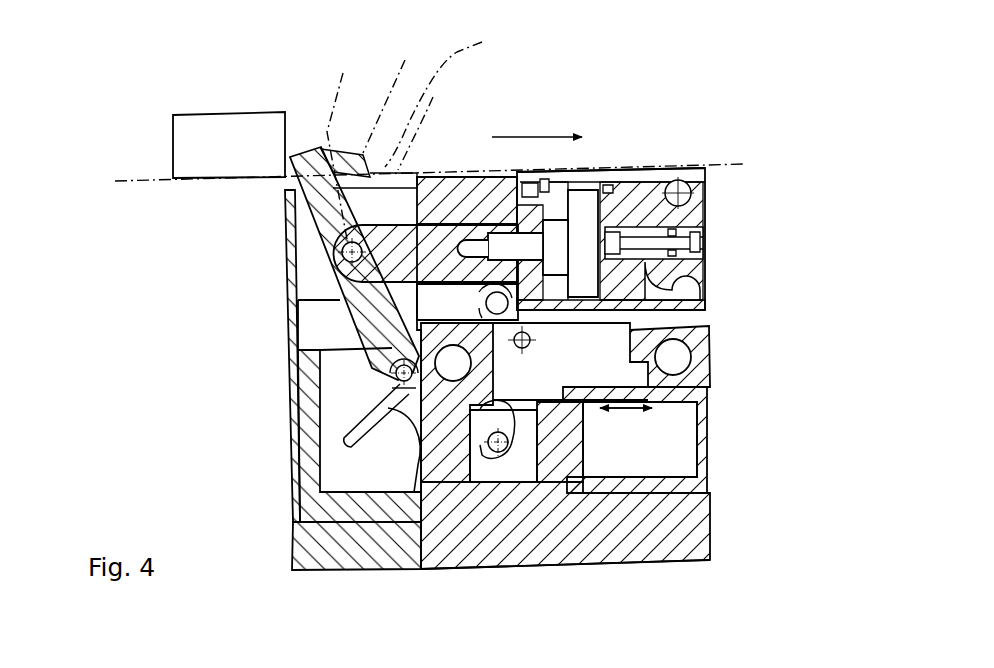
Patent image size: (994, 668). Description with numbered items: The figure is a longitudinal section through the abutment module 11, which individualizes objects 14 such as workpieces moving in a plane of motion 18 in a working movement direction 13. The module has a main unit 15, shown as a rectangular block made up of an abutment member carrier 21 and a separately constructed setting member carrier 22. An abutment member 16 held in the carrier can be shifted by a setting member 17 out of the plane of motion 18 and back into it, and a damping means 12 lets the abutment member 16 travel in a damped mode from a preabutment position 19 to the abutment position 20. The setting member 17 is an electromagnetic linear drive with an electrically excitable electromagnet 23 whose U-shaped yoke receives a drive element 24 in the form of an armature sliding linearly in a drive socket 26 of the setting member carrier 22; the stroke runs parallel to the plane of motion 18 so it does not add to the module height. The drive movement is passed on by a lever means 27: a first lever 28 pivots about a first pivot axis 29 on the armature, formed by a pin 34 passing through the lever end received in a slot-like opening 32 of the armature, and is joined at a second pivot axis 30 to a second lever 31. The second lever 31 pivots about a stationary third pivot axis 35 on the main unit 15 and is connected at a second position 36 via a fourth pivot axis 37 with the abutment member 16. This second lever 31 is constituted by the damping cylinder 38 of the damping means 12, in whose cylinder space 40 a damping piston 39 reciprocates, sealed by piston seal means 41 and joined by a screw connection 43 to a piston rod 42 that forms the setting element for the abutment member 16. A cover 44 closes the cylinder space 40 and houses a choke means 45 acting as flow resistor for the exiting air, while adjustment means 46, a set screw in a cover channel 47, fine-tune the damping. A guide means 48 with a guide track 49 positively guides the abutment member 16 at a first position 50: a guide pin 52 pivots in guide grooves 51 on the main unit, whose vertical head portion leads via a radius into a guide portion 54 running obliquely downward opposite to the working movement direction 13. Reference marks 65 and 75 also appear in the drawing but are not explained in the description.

The abutment module 11 is at (716, 126).
The damping means 12 is at (706, 214).
The working movement direction 13 is at (513, 137).
The objects 14 is at (223, 127).
The main unit 15 is at (495, 572).
The abutment member 16 is at (353, 148).
The setting member 17 is at (712, 390).
The plane of motion 18 is at (434, 119).
The preabutment position 19 is at (297, 146).
The abutment position 20 is at (399, 90).
The abutment member carrier 21 is at (333, 550).
The setting member carrier 22 is at (700, 522).
The electromagnet 23 is at (708, 447).
The drive element 24 is at (548, 478).
The drive socket 26 is at (478, 486).
The lever means 27 is at (522, 378).
The first lever 28 is at (528, 357).
The first pivot axis 29 is at (502, 445).
The second pivot axis 30 is at (496, 303).
The second lever 31 is at (613, 177).
The slot-like opening 32 is at (527, 432).
The pin 34 is at (507, 447).
The third pivot axis 35 is at (700, 186).
The second position 36 is at (344, 253).
The fourth pivot axis 37 is at (348, 258).
The damping cylinder 38 is at (704, 272).
The damping piston 39 is at (573, 168).
The cylinder space 40 is at (633, 173).
The piston seal means 41 is at (580, 167).
The piston rod 42 is at (447, 175).
The screw connection 43 is at (558, 236).
The cover 44 is at (704, 228).
The choke means 45 is at (695, 242).
The adjustment means 46 is at (712, 203).
The cover channel 47 is at (700, 281).
The guide means 48 is at (337, 422).
The guide track 49 is at (338, 457).
The first position 50 is at (402, 371).
The guide grooves 51 is at (372, 410).
The guide pin 52 is at (403, 363).
The guide portion 54 is at (420, 475).
The wedge centerline 65 is at (350, 149).
The reference line 75 is at (454, 96).